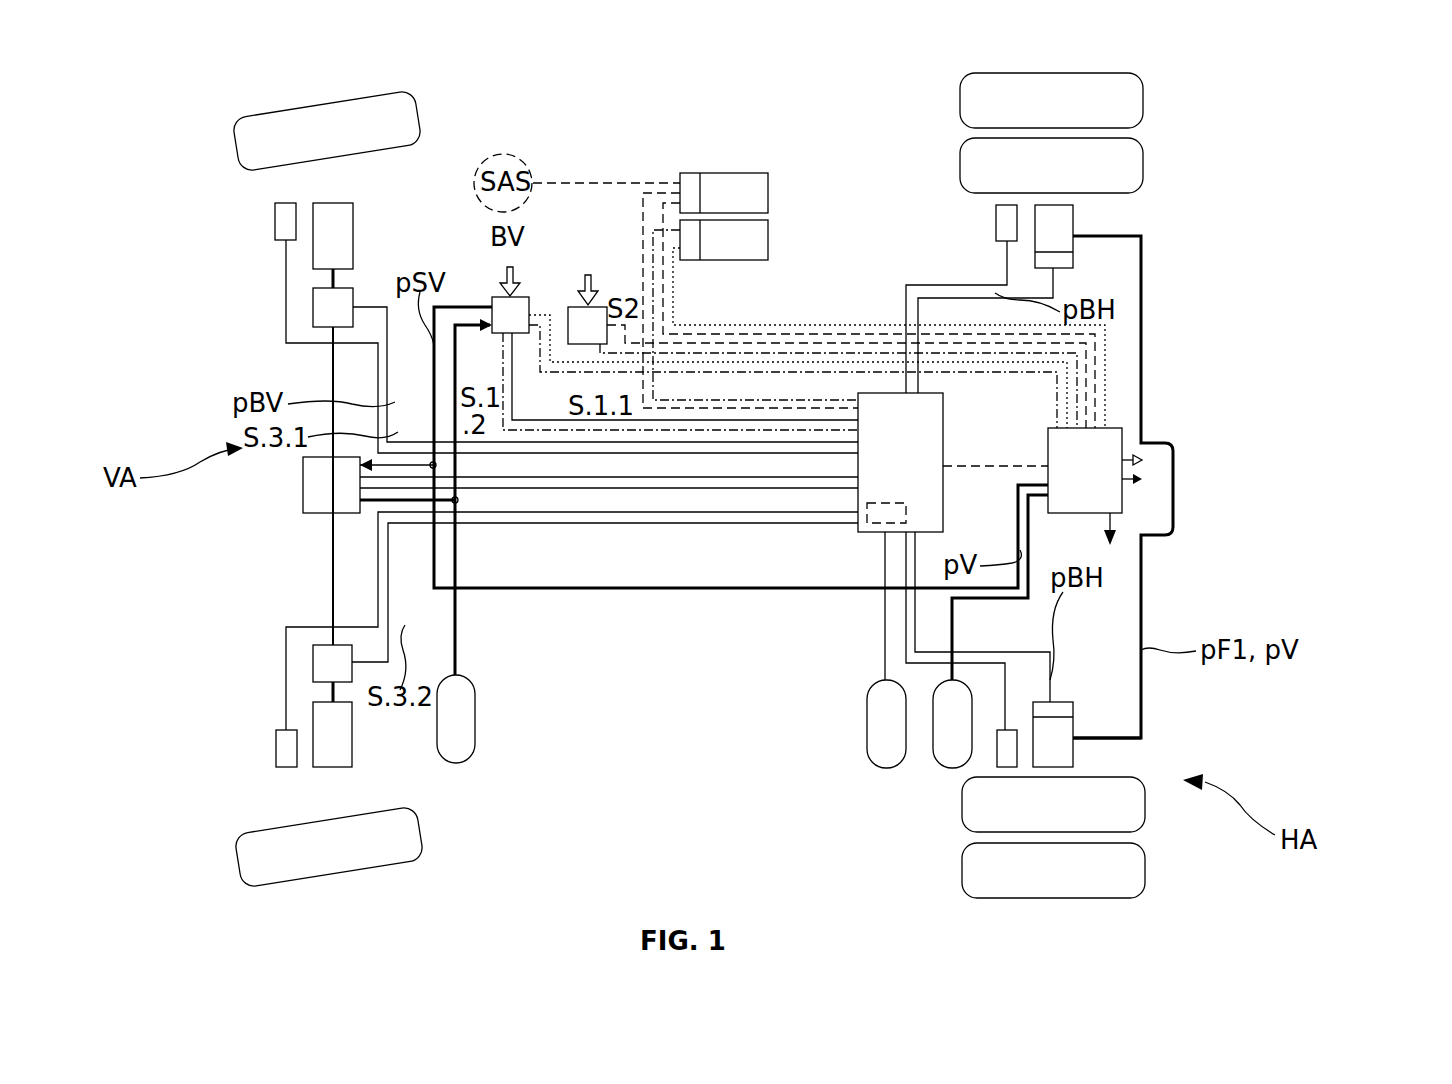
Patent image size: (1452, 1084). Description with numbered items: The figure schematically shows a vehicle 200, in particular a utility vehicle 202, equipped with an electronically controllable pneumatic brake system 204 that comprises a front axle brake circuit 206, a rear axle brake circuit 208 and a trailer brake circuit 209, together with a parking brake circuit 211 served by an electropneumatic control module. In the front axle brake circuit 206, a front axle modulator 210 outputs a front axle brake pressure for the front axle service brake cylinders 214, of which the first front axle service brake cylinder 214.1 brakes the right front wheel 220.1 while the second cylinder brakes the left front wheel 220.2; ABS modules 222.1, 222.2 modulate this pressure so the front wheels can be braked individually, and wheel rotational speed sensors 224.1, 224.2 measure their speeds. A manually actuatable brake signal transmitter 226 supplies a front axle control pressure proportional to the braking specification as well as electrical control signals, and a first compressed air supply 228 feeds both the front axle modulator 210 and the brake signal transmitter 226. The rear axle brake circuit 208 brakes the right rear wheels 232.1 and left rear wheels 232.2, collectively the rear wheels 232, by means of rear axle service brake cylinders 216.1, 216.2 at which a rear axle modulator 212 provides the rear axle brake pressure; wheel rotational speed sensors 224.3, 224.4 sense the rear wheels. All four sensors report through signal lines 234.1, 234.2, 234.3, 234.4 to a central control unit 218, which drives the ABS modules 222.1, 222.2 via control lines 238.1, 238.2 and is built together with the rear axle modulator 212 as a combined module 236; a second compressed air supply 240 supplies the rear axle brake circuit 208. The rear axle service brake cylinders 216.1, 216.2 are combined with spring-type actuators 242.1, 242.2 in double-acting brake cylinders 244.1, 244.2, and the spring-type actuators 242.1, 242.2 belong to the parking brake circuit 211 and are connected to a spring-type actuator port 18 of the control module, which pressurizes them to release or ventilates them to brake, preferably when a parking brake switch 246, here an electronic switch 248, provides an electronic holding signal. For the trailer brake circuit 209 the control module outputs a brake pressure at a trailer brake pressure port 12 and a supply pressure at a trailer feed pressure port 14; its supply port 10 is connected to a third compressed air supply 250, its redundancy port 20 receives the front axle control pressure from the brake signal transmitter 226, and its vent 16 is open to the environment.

The right front wheel 220.1 is at (292, 116).
The left front wheel 220.2 is at (348, 872).
The wheel rotational speed sensor 224.1 is at (275, 222).
The wheel rotational speed sensor 224.2 is at (276, 752).
The wheel rotational speed sensor 224.3 is at (997, 760).
The wheel rotational speed sensor 224.4 is at (996, 210).
The signal line 234.1 is at (286, 270).
The signal line 234.2 is at (286, 700).
The signal line 234.3 is at (1005, 700).
The signal line 234.4 is at (1007, 255).
The first front axle service brake cylinder 214.1 is at (353, 236).
The ABS module 222.1 is at (313, 306).
The ABS module 222.2 is at (313, 662).
The brake signal transmitter 226 is at (528, 297).
The electronic switch 248 is at (598, 307).
The parking brake switch 246 is at (839, 287).
The rear axle brake circuit 208 is at (890, 292).
The right rear wheel 232.1 is at (1143, 165).
The left rear wheel 232.2 is at (962, 805).
The rear wheels 232 is at (1235, 152).
The spring-type actuator 242.1 is at (1073, 222).
The spring-type actuator 242.2 is at (1073, 760).
The double-acting brake cylinder 244.1 is at (1073, 250).
The double-acting brake cylinder 244.2 is at (1073, 722).
The vehicle 200 is at (1250, 262).
The utility vehicle 202 is at (1275, 235).
The rear axle service brake cylinder 216.1 is at (1058, 268).
The rear axle service brake cylinder 216.2 is at (1065, 700).
The parking brake circuit 211 is at (1160, 323).
The rear axle modulator 212 is at (943, 432).
The central control unit 218 is at (906, 520).
The redundancy port 20 is at (1045, 472).
The spring-type actuator port 18 is at (1122, 435).
The trailer brake pressure port 12 is at (1142, 460).
The trailer feed pressure port 14 is at (1142, 480).
The trailer brake circuit 209 is at (1160, 520).
The combined module 236 is at (1032, 490).
The supply port 10 is at (1040, 500).
The vent 16 is at (1110, 548).
The front axle brake circuit 214 is at (220, 428).
The front axle modulator 210 is at (303, 482).
The front axle brake circuit 206 is at (295, 567).
The control line 238.1 is at (398, 373).
The control line 238.2 is at (608, 553).
The first compressed air supply 228 is at (475, 720).
The electronically controllable pneumatic brake system 204 is at (668, 668).
The second compressed air supply 240 is at (867, 698).
The third compressed air supply 250 is at (933, 748).